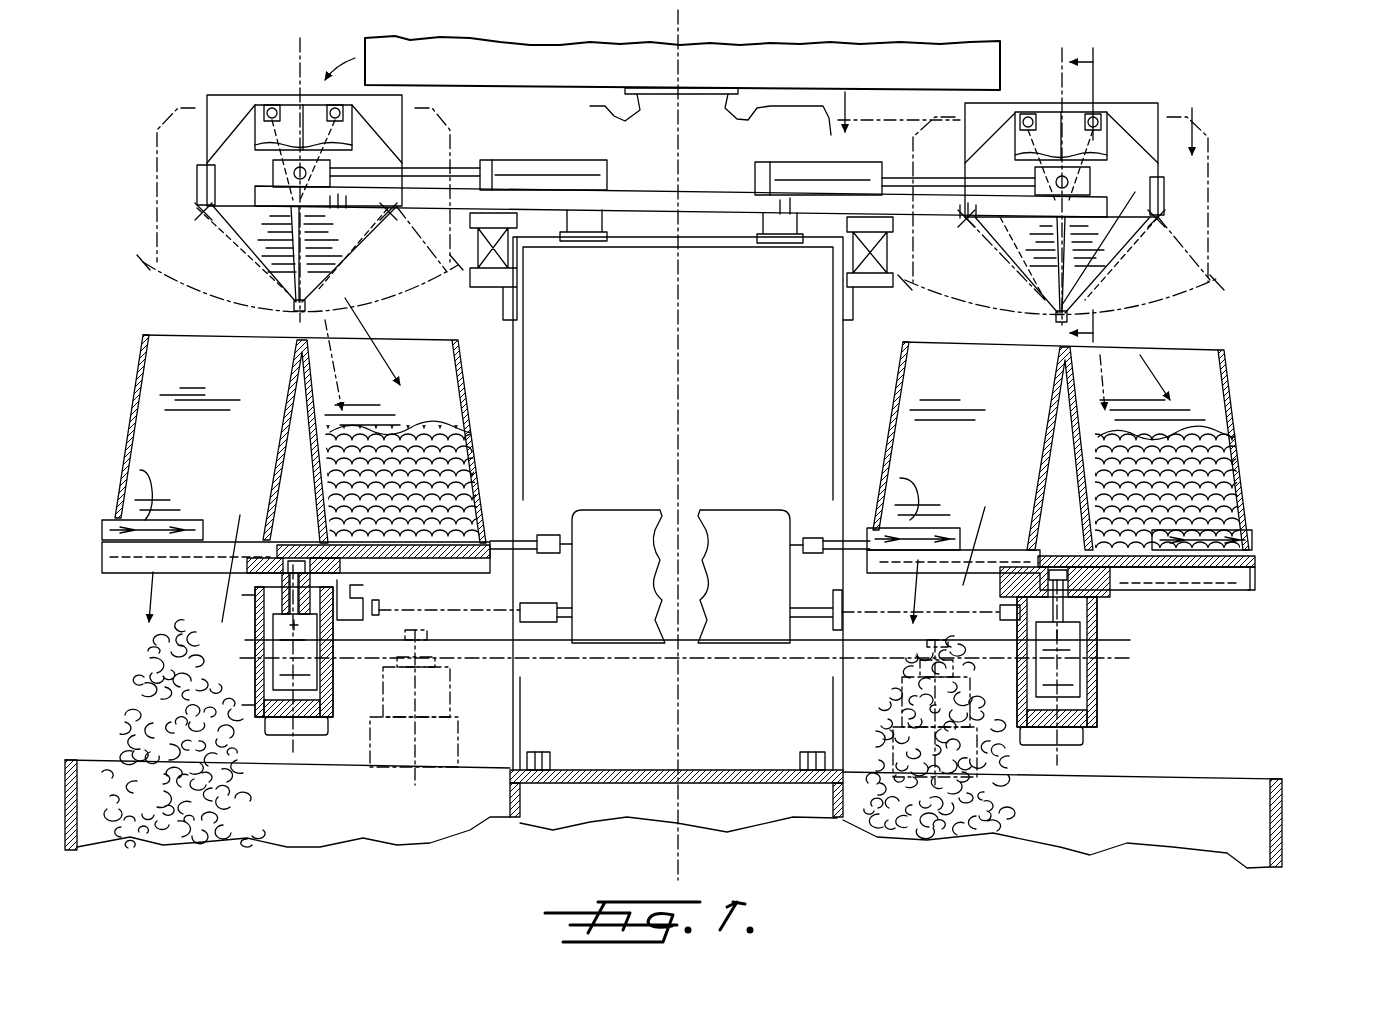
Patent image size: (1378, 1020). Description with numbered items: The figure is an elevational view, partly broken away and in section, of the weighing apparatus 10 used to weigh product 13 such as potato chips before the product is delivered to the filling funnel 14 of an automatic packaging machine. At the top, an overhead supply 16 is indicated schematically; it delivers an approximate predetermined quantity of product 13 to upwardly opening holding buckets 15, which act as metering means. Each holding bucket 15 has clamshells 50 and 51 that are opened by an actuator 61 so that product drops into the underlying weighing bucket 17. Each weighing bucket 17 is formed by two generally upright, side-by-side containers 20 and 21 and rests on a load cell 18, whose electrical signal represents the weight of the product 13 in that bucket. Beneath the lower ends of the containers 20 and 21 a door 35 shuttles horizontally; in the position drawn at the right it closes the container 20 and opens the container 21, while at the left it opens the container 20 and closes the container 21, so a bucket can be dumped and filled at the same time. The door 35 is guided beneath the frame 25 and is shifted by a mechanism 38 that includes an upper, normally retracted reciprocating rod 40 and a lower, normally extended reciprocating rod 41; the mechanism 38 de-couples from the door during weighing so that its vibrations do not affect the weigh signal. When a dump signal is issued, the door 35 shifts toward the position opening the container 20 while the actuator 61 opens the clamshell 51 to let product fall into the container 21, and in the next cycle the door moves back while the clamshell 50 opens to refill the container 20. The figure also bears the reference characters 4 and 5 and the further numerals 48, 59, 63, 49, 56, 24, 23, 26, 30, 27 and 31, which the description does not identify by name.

The weighing apparatus 10 is at (252, 75).
The overhead supply 16 is at (506, 84).
The section line 4 is at (858, 87).
The section line 5 is at (1098, 197).
The distributor housing 48 is at (1060, 96).
The pivot bolts 59 is at (1024, 118).
The actuator 61 is at (792, 162).
The piston rod coupling 63 is at (1055, 180).
The holding bucket 15 is at (195, 183).
The chute wall 49 is at (1027, 218).
The chute plate 56 is at (1030, 283).
The clamshell 50 is at (1130, 305).
The clamshell 51 is at (1010, 310).
The weighing bucket 17 is at (135, 370).
The container 21 is at (995, 393).
The container 20 is at (1147, 395).
The bottom plate 24 is at (895, 438).
The partition wall 23 is at (1035, 470).
The product 13 is at (1180, 500).
The frame 25 is at (1245, 532).
The door 35 is at (445, 546).
The shifting mechanism 38 is at (720, 510).
The upper reciprocating rod 40 is at (812, 538).
The support beam 26 is at (867, 570).
The bracket 30 is at (1082, 593).
The guide 27 is at (1218, 592).
The load cell 18 is at (307, 660).
The cylinder housing 31 is at (1098, 683).
The lower reciprocating rod 41 is at (860, 642).
The filling funnel 14 is at (1285, 803).